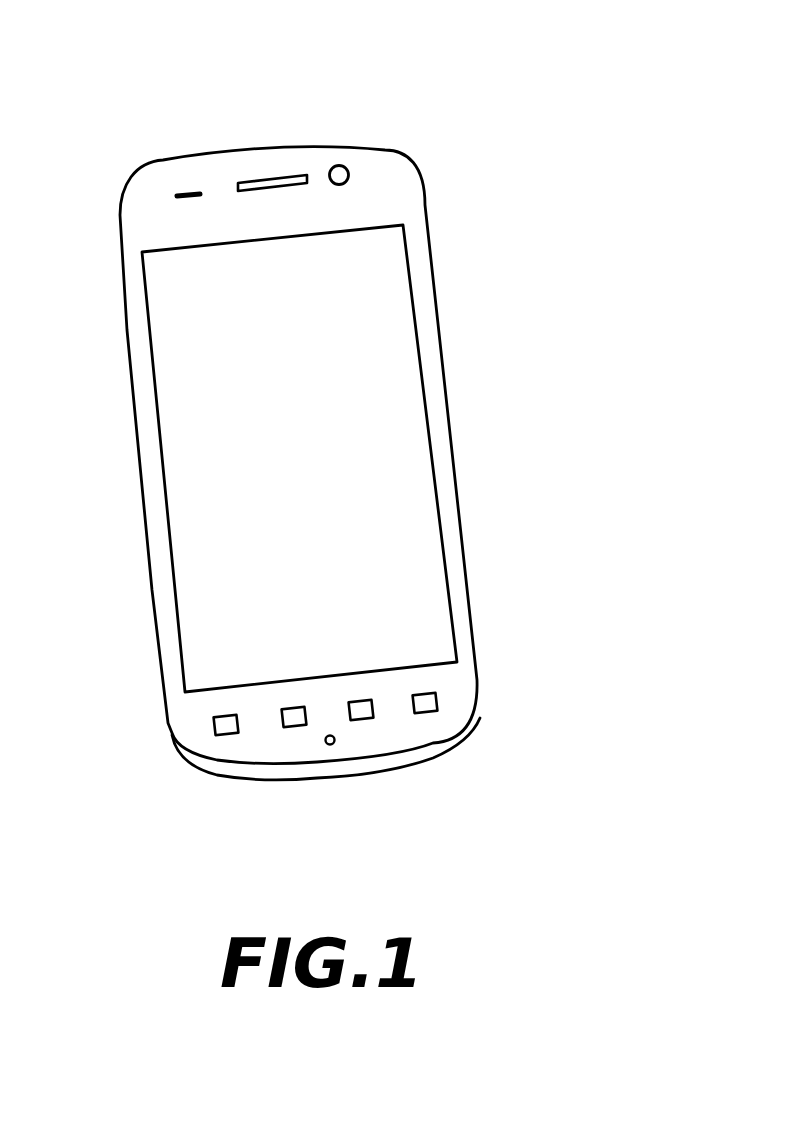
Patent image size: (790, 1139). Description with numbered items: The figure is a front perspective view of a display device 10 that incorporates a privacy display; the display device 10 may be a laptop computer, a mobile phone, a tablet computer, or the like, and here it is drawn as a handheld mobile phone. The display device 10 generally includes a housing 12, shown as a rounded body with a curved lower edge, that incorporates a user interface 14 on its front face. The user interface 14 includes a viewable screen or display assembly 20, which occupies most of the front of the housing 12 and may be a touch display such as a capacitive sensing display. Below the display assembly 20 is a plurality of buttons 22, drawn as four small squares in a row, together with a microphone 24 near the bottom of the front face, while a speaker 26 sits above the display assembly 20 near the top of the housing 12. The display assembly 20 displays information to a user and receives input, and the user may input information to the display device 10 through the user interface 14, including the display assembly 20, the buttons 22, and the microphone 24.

The display device 10 is at (476, 85).
The housing 12 is at (143, 521).
The user interface 14 is at (509, 466).
The display assembly 20 is at (352, 398).
The buttons 22 is at (458, 685).
The microphone 24 is at (334, 744).
The speaker 26 is at (267, 182).